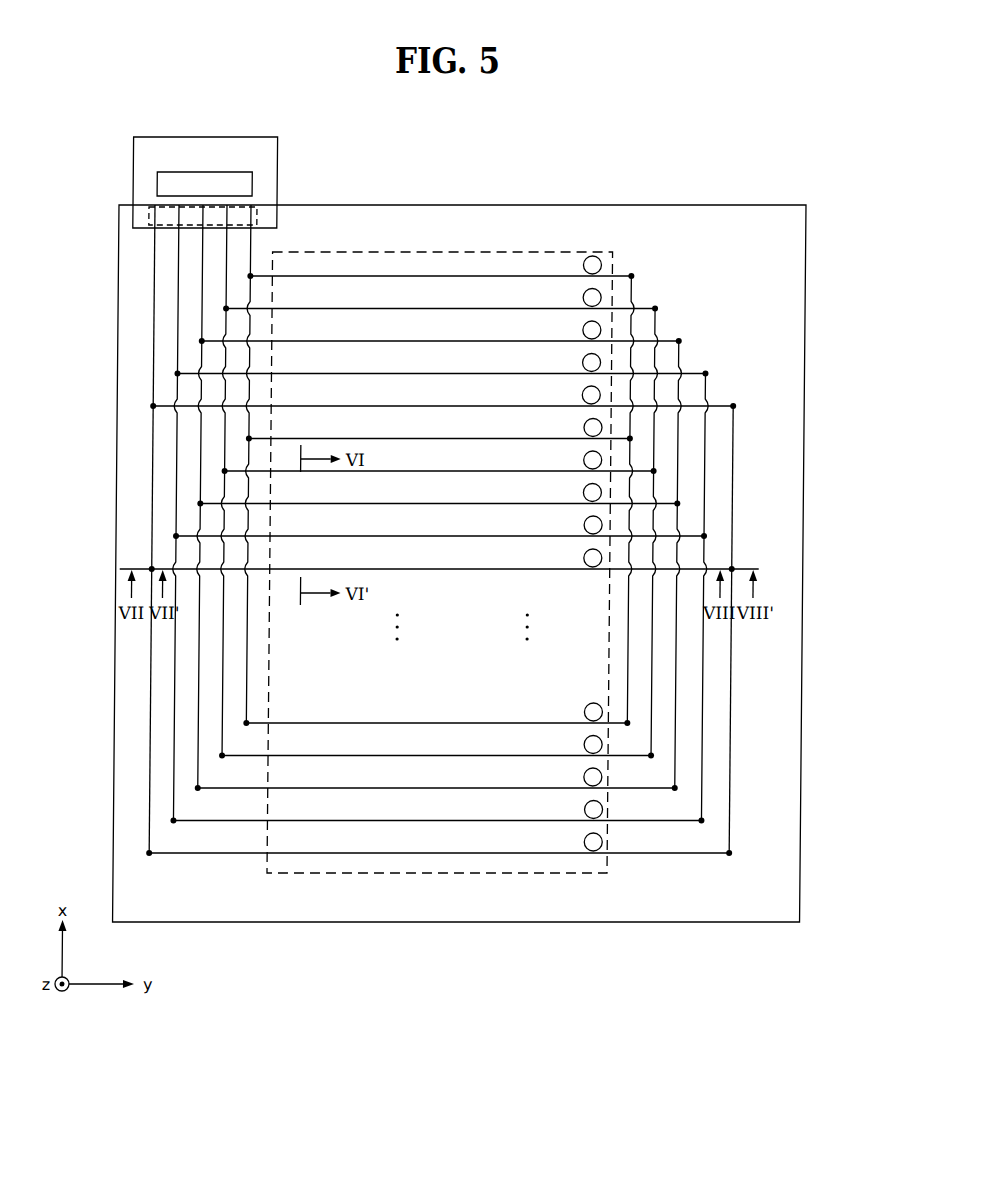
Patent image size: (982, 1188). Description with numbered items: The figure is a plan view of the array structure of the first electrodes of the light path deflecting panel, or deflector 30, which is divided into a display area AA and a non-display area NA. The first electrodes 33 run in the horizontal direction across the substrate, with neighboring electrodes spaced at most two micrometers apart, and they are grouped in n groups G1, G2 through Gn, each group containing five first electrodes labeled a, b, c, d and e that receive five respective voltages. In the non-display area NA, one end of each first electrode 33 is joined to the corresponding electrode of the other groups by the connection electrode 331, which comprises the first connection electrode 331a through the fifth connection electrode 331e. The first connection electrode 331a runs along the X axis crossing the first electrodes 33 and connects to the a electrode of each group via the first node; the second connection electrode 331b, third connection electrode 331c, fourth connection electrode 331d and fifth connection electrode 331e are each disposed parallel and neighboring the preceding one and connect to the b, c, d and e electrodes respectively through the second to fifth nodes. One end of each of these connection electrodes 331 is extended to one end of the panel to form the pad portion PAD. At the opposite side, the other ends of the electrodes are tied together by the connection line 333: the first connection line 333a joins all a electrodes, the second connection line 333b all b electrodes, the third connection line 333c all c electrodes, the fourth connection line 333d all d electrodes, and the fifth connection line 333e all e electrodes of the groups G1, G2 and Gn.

The deflector (light path deflecting panel) 30 is at (562, 205).
The first electrode 33 is at (497, 259).
The pad portion PAD is at (258, 214).
The connection electrode 331 is at (126, 529).
The first connection electrode 331a is at (251, 247).
The second connection electrode 331b is at (227, 268).
The third connection electrode 331c is at (203, 287).
The fourth connection electrode 331d is at (179, 312).
The fifth connection electrode 331e is at (155, 328).
The connection line 333 is at (777, 564).
The first connection line 333a is at (632, 623).
The second connection line 333b is at (656, 643).
The third connection line 333c is at (680, 663).
The fourth connection line 333d is at (707, 685).
The fifth connection line 333e is at (878, 610).
The first group G1 is at (764, 258).
The second group G2 is at (766, 577).
The n-th group Gn is at (768, 720).
The display area AA is at (392, 866).
The non-display area NA is at (302, 908).